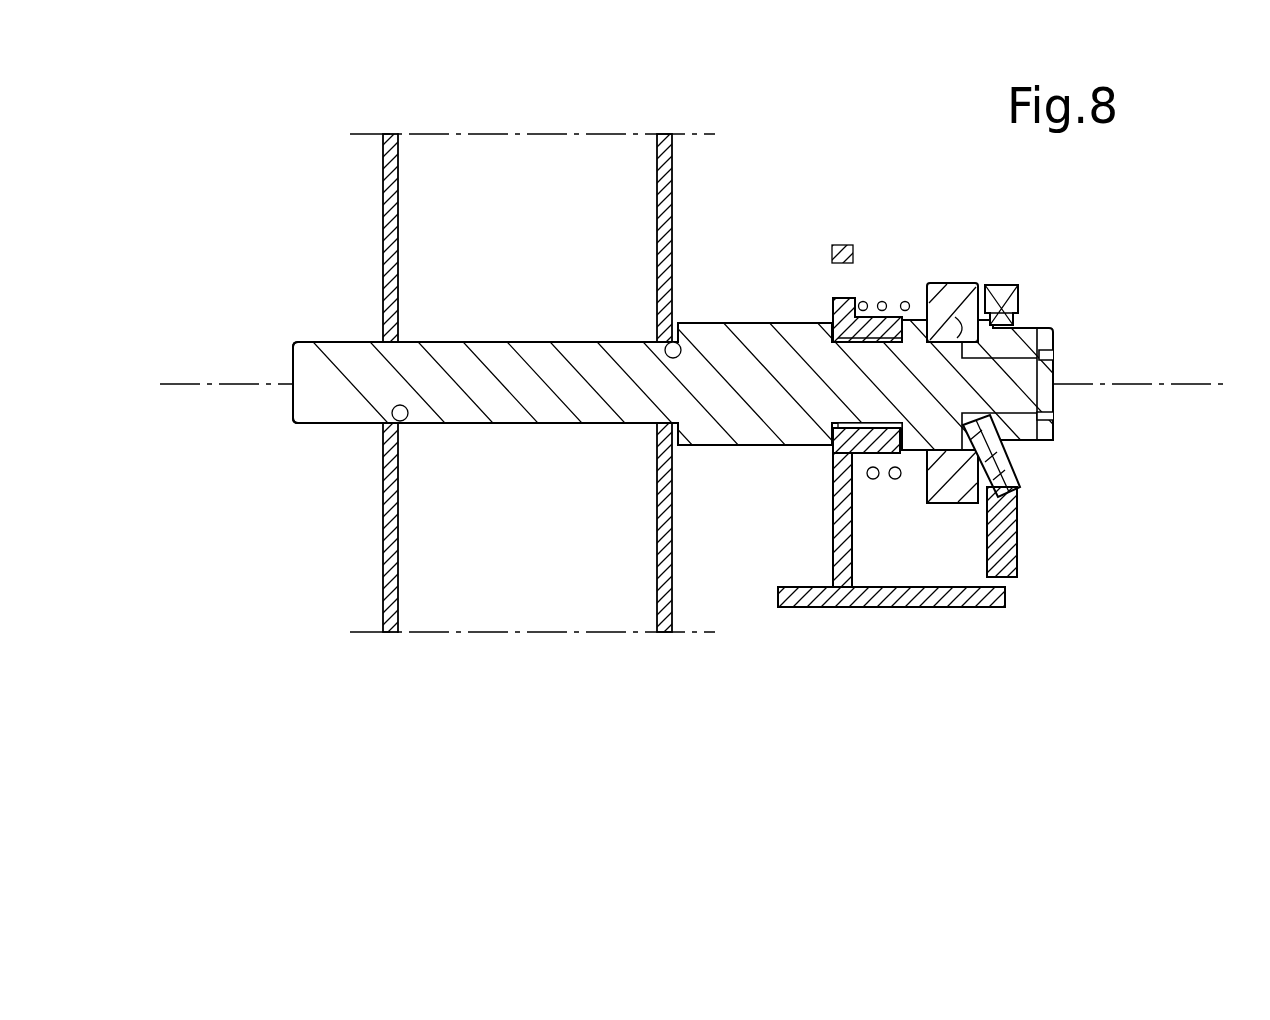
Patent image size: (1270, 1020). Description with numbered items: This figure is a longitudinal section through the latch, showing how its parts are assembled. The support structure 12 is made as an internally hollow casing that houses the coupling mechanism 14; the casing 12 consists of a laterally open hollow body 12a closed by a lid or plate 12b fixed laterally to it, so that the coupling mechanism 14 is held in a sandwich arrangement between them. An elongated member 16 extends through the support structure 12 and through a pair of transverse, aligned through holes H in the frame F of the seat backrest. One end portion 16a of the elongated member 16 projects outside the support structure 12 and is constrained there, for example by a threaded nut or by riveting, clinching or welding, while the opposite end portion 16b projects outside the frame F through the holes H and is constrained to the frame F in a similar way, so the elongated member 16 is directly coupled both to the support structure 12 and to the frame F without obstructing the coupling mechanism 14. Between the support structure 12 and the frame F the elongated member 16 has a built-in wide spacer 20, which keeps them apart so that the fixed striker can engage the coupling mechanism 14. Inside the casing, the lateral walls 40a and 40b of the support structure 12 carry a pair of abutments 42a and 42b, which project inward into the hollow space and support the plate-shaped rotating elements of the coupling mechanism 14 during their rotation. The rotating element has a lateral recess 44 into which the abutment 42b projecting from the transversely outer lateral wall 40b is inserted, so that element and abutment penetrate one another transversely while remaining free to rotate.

The support structure 12 is at (939, 616).
The hollow body 12a is at (790, 600).
The lid or plate 12b is at (1013, 580).
The coupling mechanism 14 is at (940, 512).
The elongated member 16 is at (750, 316).
The portion of elongated member 16a is at (1008, 395).
The further portion of elongated member 16b is at (335, 385).
The spacer 20 is at (740, 412).
The lateral wall 40a is at (840, 527).
The lateral wall 40b is at (1005, 540).
The abutment 42a is at (862, 298).
The abutment 42b is at (1005, 468).
The recess 44 is at (1010, 290).
The through holes H is at (681, 343).
The frame F is at (515, 610).